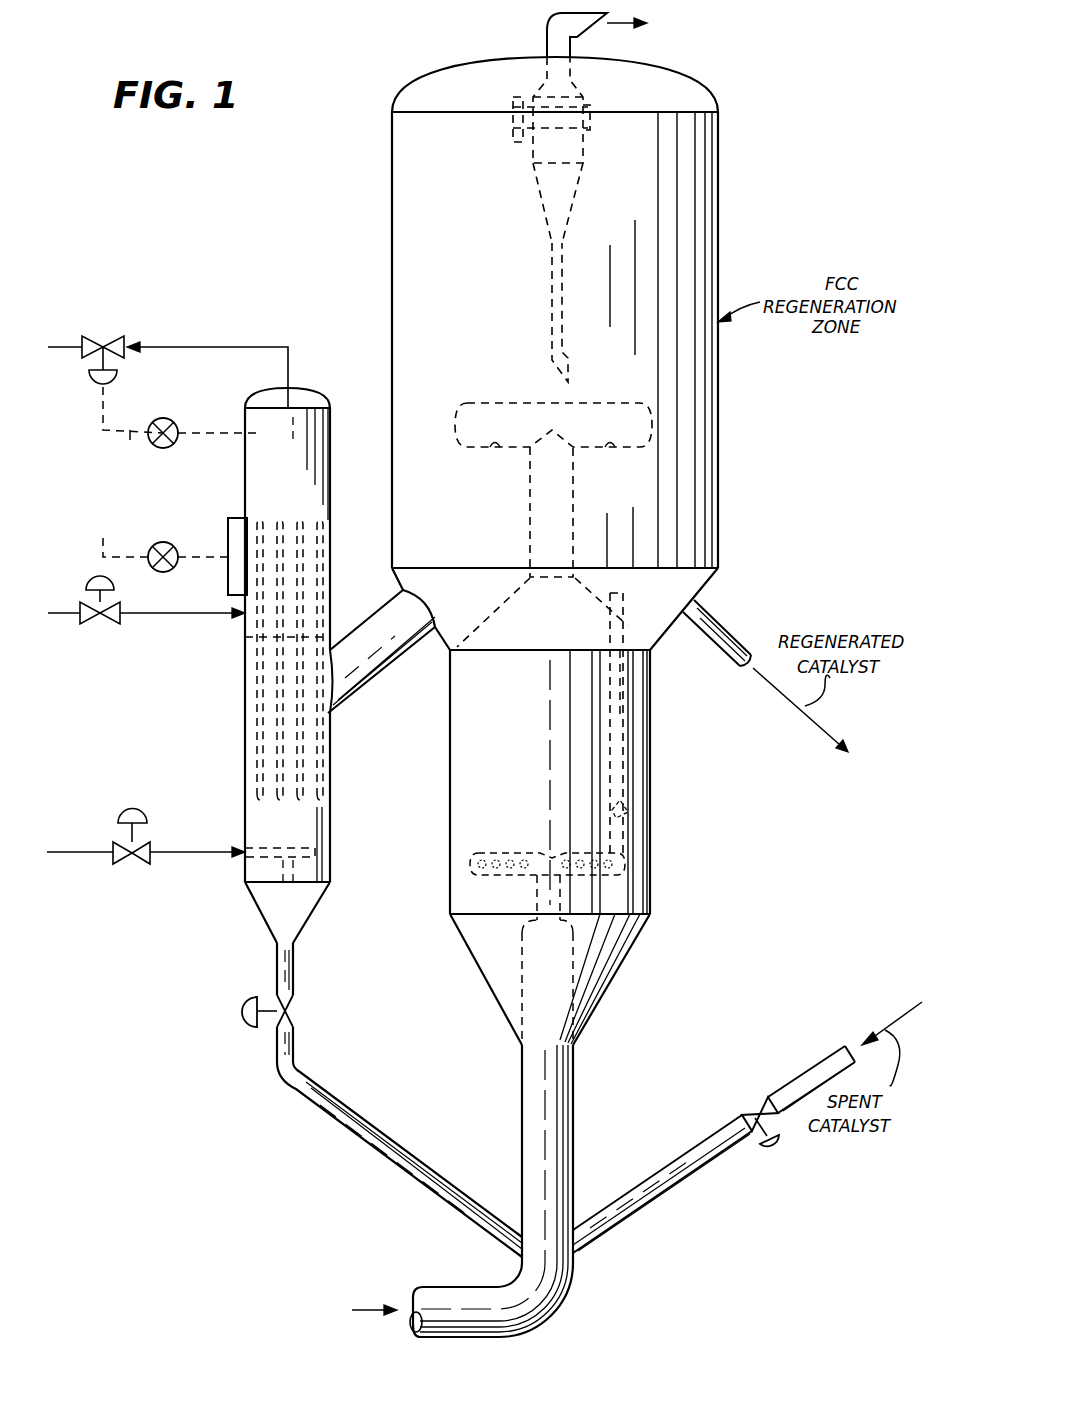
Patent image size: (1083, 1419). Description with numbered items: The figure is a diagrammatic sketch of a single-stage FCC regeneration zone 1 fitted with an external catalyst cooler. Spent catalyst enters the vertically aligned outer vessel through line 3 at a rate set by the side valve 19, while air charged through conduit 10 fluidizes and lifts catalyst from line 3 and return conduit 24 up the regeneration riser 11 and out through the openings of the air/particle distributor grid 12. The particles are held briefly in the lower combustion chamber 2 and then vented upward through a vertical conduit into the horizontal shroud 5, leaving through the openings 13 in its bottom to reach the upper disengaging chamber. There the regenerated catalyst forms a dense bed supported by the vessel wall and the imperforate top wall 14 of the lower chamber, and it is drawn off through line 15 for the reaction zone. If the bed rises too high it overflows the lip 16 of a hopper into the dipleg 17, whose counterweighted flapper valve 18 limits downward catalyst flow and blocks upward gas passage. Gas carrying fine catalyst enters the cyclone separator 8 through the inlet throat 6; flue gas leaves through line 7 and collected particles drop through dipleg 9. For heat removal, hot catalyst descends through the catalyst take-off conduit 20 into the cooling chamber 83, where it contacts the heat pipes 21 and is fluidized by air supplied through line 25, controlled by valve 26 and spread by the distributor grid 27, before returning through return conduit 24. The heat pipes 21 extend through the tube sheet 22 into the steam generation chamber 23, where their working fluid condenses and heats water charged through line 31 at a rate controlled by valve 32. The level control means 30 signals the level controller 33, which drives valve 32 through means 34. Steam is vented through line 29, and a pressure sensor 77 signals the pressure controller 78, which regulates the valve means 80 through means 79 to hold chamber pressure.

The FCC regeneration zone 1 is at (722, 192).
The lower regeneration or combustion chamber 2 is at (651, 765).
The spent catalyst line 3 is at (672, 1186).
The horizontal shroud 5 is at (530, 400).
The inlet throat 6 is at (517, 140).
The flue gas line 7 is at (553, 23).
The cyclone separator 8 is at (587, 142).
The dipleg 9 is at (565, 312).
The air conduit 10 is at (464, 1287).
The regeneration riser 11 is at (575, 1108).
The air/particle distributor grid 12 is at (490, 873).
The openings 13 is at (610, 447).
The imperforate top wall 14 is at (510, 582).
The regenerated catalyst line 15 is at (725, 625).
The lip 16 is at (613, 593).
The dipleg 17 is at (620, 720).
The counterweighted flapper valve 18 is at (628, 813).
The side valve 19 is at (748, 1112).
The catalyst take-off conduit 20 is at (360, 690).
The heat pipes 21 is at (307, 753).
The tube sheet 22 is at (305, 625).
The steam generation chamber 23 is at (345, 430).
The return conduit 24 is at (360, 1113).
The air line 25 is at (183, 855).
The valve 26 is at (142, 860).
The distributor grid 27 is at (283, 847).
The steam line 29 is at (290, 377).
The level control means 30 is at (228, 532).
The water line 31 is at (205, 617).
The valve 32 is at (95, 625).
The level controller 33 is at (175, 568).
The signal means 34 is at (103, 540).
The pressure sensor 77 is at (246, 435).
The pressure controller 78 is at (166, 418).
The signal means 79 is at (127, 442).
The valve means 80 is at (100, 357).
The cooling chamber 83 is at (332, 793).